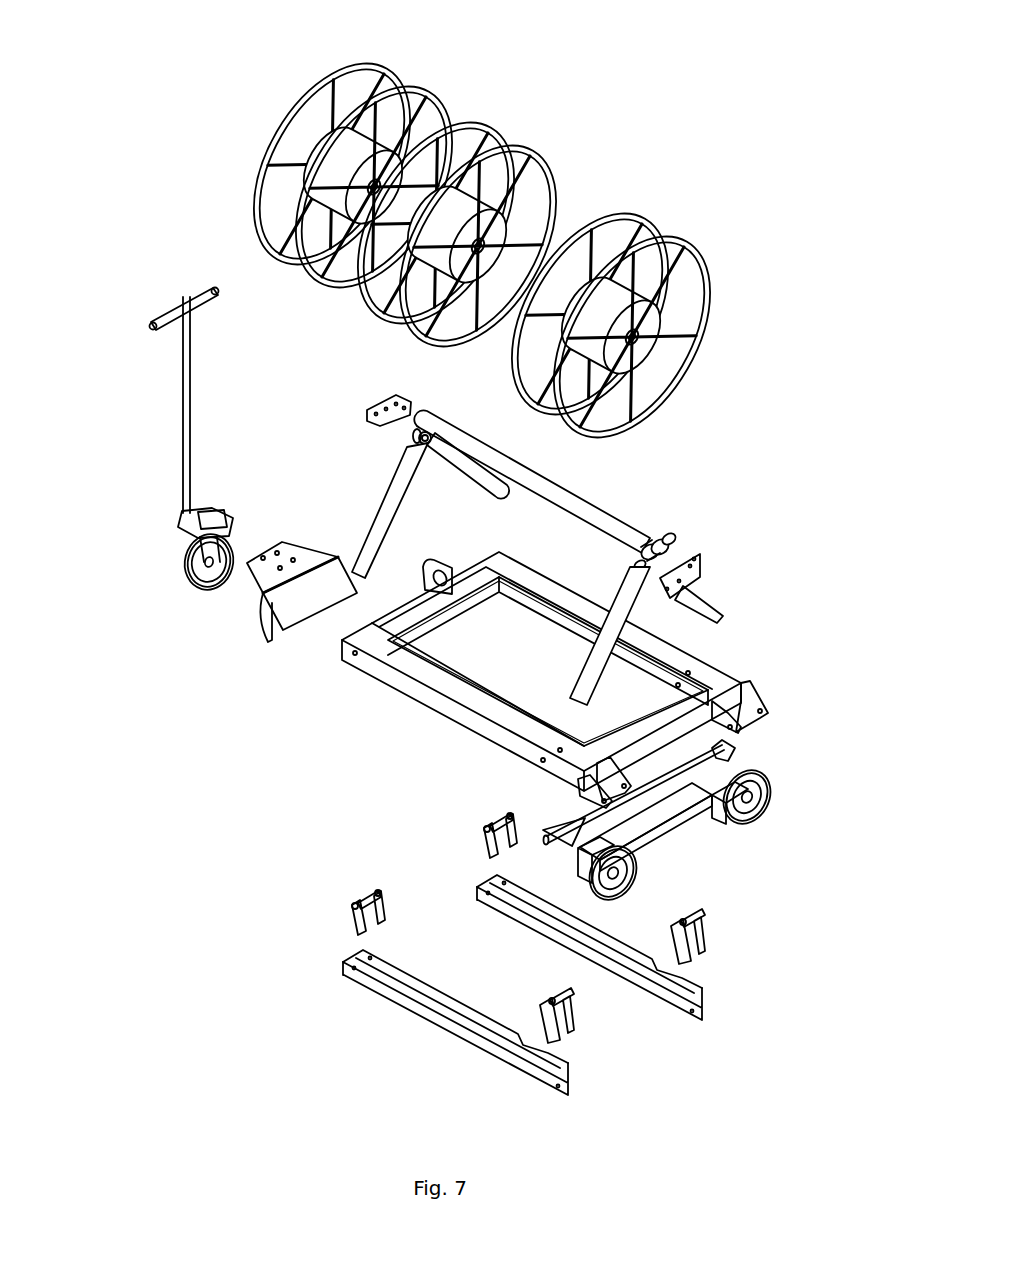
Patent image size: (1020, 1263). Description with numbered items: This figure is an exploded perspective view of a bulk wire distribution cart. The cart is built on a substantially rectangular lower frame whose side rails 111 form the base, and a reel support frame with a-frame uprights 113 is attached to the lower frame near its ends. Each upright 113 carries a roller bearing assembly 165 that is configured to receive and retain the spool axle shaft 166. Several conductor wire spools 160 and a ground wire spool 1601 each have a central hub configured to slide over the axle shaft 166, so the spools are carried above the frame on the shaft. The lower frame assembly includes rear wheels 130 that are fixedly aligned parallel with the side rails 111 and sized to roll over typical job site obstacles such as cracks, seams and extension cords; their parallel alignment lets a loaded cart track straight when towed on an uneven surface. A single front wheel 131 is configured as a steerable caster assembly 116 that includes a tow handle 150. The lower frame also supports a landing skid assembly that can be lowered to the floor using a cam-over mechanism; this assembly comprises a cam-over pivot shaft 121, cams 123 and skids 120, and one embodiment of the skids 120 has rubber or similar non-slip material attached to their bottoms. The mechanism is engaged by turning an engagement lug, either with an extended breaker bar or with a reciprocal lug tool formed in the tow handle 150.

The ground wire spool 1601 is at (437, 99).
The conductor wire spools 160 is at (608, 192).
The tow handle 150 is at (179, 425).
The front wheel 131 is at (194, 588).
The steerable caster assembly 116 is at (270, 617).
The spool axle shaft 166 is at (603, 508).
The roller bearing assembly 165 is at (408, 434).
The a-frame uprights 113 is at (707, 590).
The side rails 111 is at (717, 662).
The cam-over pivot shaft 121 is at (568, 810).
The rear wheels 130 is at (770, 777).
The skids 120 is at (396, 1005).
The cams 123 is at (349, 896).